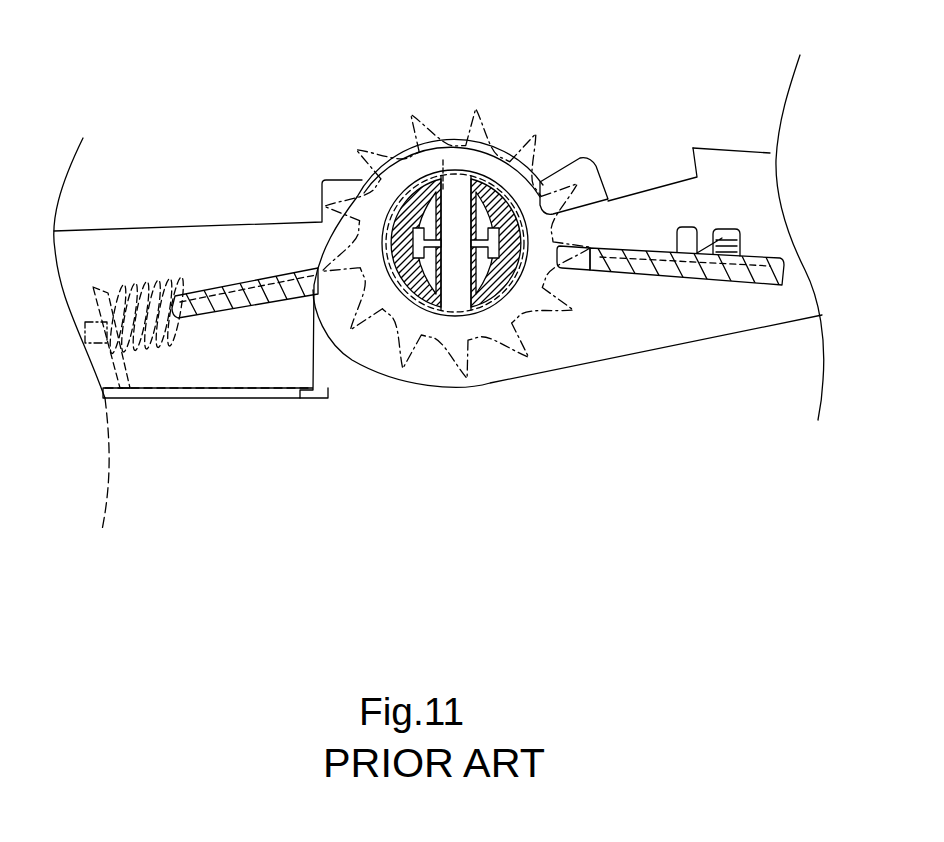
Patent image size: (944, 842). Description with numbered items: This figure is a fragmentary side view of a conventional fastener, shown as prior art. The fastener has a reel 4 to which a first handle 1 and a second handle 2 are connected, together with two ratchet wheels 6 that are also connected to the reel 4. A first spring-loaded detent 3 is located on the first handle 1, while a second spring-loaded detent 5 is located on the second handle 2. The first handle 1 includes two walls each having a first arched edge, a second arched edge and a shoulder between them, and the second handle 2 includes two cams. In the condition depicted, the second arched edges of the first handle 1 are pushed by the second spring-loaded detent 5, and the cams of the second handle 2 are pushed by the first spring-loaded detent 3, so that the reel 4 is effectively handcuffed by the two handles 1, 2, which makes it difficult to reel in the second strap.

The first handle 1 is at (218, 236).
The second handle 2 is at (722, 170).
The first spring-loaded detent 3 is at (258, 300).
The reel 4 is at (434, 178).
The second spring-loaded detent 5 is at (647, 282).
The ratchet wheels 6 is at (455, 218).